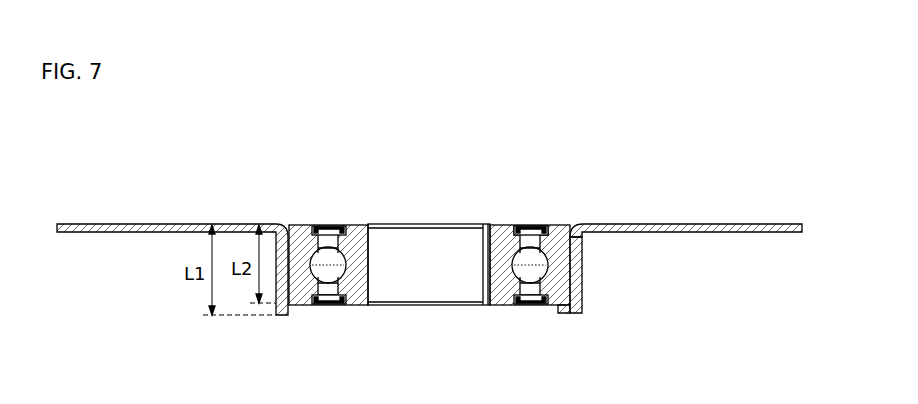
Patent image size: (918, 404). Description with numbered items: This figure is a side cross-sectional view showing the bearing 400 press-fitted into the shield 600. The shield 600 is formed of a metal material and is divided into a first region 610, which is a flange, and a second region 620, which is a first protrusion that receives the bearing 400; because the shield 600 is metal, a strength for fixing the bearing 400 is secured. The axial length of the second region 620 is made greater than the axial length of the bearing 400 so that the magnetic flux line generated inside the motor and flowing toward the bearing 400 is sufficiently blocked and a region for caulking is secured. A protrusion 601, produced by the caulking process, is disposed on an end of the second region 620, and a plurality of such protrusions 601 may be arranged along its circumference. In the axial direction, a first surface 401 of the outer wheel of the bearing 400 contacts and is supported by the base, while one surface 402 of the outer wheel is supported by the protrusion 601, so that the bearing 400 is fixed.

The shield 600 is at (718, 207).
The first region 610 is at (723, 233).
The second region 620 is at (584, 276).
The protrusion 601 is at (561, 314).
The bearing 400 is at (430, 286).
The first surface 401 is at (558, 224).
The one surface 402 is at (549, 307).